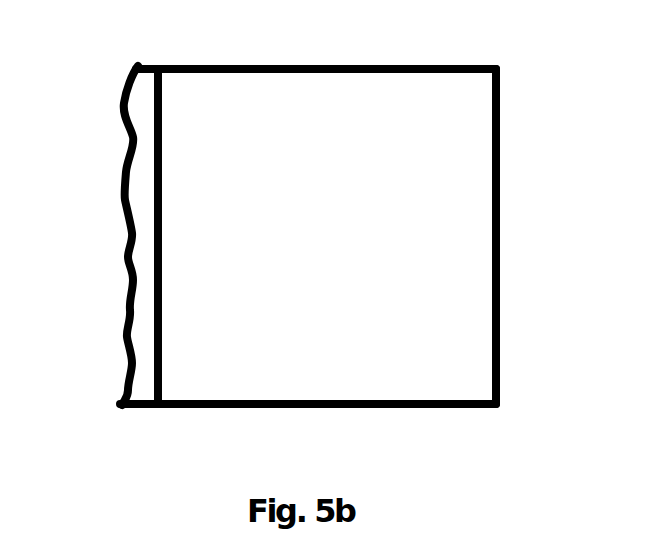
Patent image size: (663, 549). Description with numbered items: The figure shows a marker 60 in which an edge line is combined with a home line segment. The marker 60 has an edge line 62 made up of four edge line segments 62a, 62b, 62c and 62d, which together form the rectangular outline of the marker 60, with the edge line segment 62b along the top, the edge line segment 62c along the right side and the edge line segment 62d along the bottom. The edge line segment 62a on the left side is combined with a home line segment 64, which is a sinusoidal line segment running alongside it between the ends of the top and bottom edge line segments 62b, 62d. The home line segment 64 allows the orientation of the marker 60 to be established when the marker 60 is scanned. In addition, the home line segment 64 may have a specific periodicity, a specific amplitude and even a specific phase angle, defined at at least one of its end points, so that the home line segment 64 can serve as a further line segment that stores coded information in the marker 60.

The marker 60 is at (325, 245).
The edge line 62 is at (320, 245).
The edge line segment 62a is at (154, 190).
The edge line segment 62b is at (263, 67).
The edge line segment 62c is at (501, 226).
The edge line segment 62d is at (307, 410).
The home line segment 64 is at (123, 255).